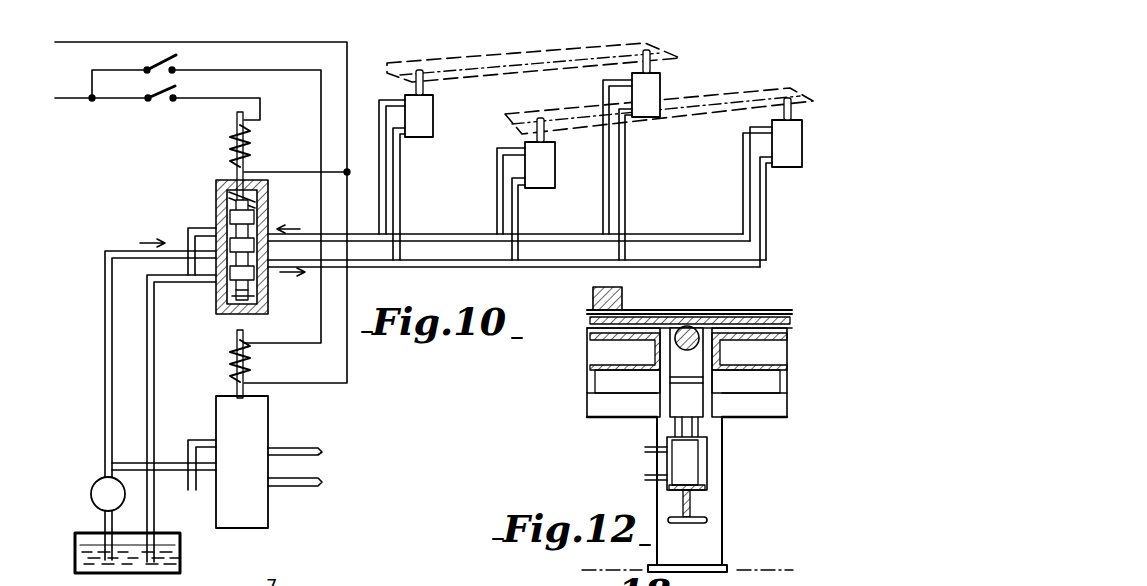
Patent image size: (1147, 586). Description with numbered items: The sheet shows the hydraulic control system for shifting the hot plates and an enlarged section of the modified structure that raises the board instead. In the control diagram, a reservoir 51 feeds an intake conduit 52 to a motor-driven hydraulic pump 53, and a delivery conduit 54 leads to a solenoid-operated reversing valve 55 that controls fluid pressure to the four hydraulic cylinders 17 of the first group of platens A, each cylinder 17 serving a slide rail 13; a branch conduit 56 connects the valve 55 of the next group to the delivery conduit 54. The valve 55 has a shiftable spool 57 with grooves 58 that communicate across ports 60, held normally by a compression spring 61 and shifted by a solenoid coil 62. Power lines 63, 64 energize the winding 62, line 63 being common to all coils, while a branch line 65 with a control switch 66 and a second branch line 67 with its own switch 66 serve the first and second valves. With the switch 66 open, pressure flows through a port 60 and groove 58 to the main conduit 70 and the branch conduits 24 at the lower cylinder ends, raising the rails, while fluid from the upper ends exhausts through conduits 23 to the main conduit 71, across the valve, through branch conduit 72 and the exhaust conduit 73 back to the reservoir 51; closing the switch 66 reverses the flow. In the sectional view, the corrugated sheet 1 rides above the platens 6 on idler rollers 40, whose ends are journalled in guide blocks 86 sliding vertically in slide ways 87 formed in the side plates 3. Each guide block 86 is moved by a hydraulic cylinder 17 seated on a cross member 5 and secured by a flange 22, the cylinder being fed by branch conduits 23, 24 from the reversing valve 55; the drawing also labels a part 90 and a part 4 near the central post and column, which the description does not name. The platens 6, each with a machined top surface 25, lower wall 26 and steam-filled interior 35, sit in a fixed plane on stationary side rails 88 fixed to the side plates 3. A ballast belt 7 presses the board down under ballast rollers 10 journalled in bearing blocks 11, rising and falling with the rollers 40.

In FIG. 10, the power line 63 is at (84, 42).
In FIG. 10, the power line 64 is at (72, 84).
In FIG. 10, the branch line 65 is at (124, 106).
In FIG. 10, the control switch 66 is at (154, 60).
In FIG. 10, the second branch line 67 is at (116, 68).
In FIG. 10, the solenoid coil 62 is at (248, 132).
In FIG. 10, the solenoid-operated reversing valve 55 is at (216, 186).
In FIG. 10, the compression spring 61 is at (268, 190).
In FIG. 10, the ports 60 is at (226, 214).
In FIG. 10, the grooves 58 is at (230, 292).
In FIG. 10, the spool 57 is at (254, 296).
In FIG. 10, the branch conduit 72 is at (182, 230).
In FIG. 10, the delivery conduit 54 is at (100, 282).
In FIG. 10, the exhaust conduit 73 is at (154, 360).
In FIG. 10, the branch conduit 56 is at (166, 464).
In FIG. 10, the hydraulic pump 53 is at (100, 480).
In FIG. 10, the intake conduit 52 is at (100, 522).
In FIG. 10, the reservoir 51 is at (180, 548).
In FIG. 10, the main conduit 71 is at (452, 234).
In FIG. 10, the main conduit 70 is at (432, 268).
In FIG. 10, the slide rail 13 is at (582, 52).
In FIG. 10, the first group of platens A is at (490, 62).
In FIG. 10, the hydraulic cylinder 17 is at (420, 104).
In FIG. 12, the hydraulic cylinder 17 is at (694, 468).
In FIG. 10, the branch conduit 23 is at (380, 98).
In FIG. 12, the branch conduit 23 is at (646, 446).
In FIG. 10, the branch conduit 24 is at (400, 155).
In FIG. 12, the branch conduit 24 is at (646, 481).
In FIG. 12, the ballast roller 10 is at (593, 298).
In FIG. 12, the bearing block 11 is at (624, 298).
In FIG. 12, the ballast belt 7 is at (772, 308).
In FIG. 12, the corrugated sheet 1 is at (578, 320).
In FIG. 12, the platen 6 is at (580, 346).
In FIG. 12, the lower wall 26 is at (600, 378).
In FIG. 12, the interior of the platen 35 is at (775, 350).
In FIG. 12, the stationary side rail 88 is at (790, 385).
In FIG. 12, the side plate 3 is at (787, 404).
In FIG. 12, the central post 90 is at (650, 326).
In FIG. 12, the idler roller 40 is at (690, 326).
In FIG. 12, the top surface 25 is at (740, 330).
In FIG. 12, the guide block 86 is at (690, 372).
In FIG. 12, the slide way 87 is at (697, 430).
In FIG. 12, the flange 22 is at (706, 455).
In FIG. 12, the cross member 5 is at (690, 505).
In FIG. 12, the support column 4 is at (715, 543).